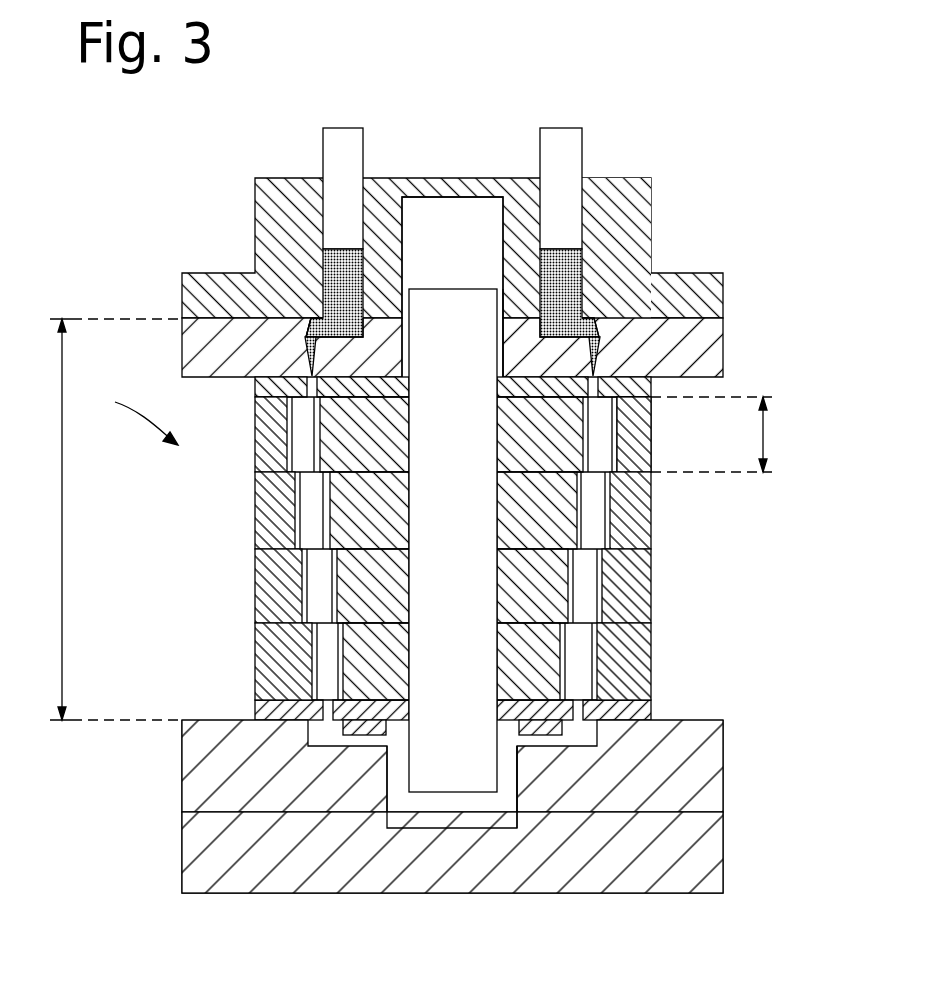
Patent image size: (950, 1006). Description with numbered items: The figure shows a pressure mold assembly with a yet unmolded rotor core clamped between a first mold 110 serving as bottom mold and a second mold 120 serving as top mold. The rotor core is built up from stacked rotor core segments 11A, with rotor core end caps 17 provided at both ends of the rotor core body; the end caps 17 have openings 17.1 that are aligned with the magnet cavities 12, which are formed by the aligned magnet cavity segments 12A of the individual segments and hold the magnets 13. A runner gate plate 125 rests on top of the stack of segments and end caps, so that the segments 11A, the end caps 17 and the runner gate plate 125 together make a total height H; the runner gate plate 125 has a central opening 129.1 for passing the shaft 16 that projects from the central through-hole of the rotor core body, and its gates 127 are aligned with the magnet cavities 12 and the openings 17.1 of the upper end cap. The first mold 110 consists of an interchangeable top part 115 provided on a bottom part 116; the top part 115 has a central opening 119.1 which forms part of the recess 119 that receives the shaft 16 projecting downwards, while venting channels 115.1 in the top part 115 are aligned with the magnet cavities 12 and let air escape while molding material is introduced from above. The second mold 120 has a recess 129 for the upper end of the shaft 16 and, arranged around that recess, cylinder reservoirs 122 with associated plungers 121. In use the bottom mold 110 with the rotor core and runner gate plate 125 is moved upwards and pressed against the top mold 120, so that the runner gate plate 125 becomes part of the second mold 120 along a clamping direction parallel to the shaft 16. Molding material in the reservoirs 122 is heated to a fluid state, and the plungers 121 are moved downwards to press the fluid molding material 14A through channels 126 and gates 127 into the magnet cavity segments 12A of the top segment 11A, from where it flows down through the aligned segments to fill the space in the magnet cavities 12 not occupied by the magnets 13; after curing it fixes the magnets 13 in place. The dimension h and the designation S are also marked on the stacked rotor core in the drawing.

The first mold 110 is at (723, 830).
The top part of the first mold 115 is at (710, 763).
The venting channels 115.1 is at (327, 736).
The bottom part of the first mold 116 is at (713, 878).
The recess 119 is at (404, 810).
The opening 119.1 is at (508, 778).
The second mold 120 is at (697, 290).
The plungers 121 is at (336, 157).
The cylinder reservoirs 122 is at (338, 277).
The runner gate plate 125 is at (673, 350).
The channels 126 is at (323, 322).
The gates 127 is at (317, 352).
The recess 129 is at (437, 218).
The central opening 129.1 is at (523, 228).
The fluid molding material 14A is at (342, 315).
The shaft 16 is at (465, 680).
The rotor core end caps 17 is at (255, 387).
The openings 17.1 is at (626, 401).
The rotor core segments 11A is at (265, 642).
The magnet cavity segments 12A is at (618, 453).
The magnet cavities 12 is at (610, 612).
The magnets 13 is at (640, 588).
The total height H is at (99, 519).
The segment height h is at (766, 432).
The stack S is at (139, 413).